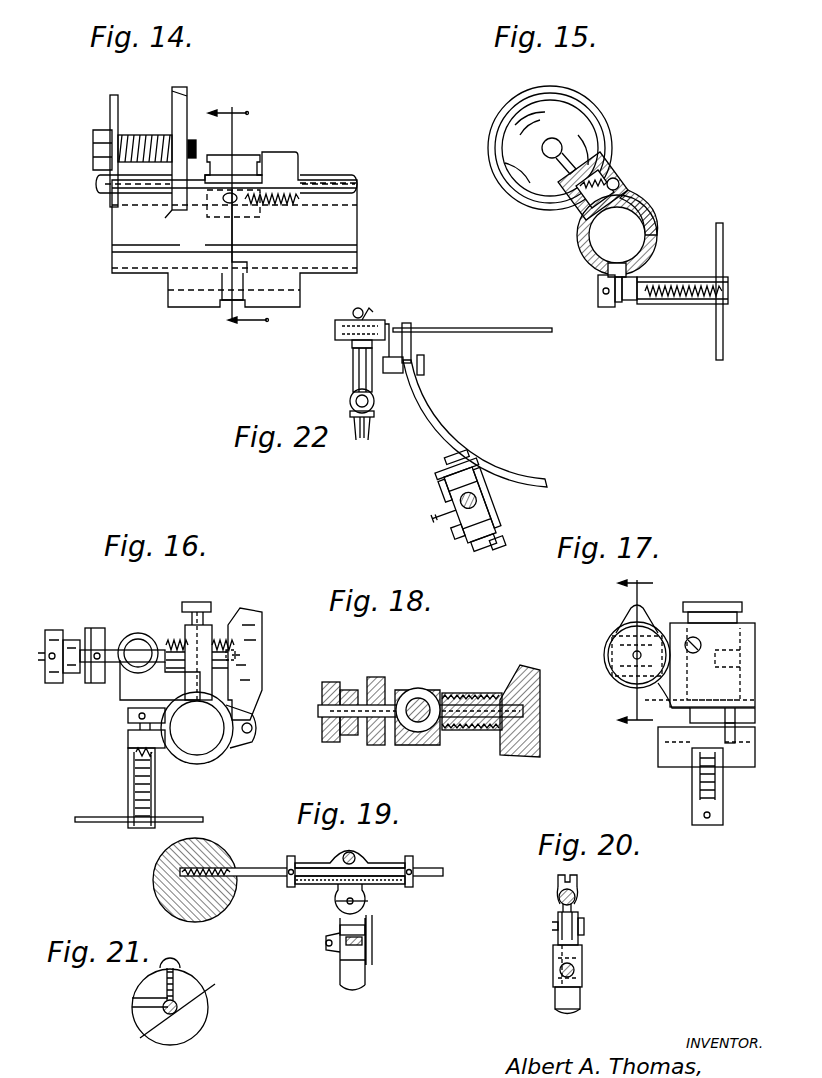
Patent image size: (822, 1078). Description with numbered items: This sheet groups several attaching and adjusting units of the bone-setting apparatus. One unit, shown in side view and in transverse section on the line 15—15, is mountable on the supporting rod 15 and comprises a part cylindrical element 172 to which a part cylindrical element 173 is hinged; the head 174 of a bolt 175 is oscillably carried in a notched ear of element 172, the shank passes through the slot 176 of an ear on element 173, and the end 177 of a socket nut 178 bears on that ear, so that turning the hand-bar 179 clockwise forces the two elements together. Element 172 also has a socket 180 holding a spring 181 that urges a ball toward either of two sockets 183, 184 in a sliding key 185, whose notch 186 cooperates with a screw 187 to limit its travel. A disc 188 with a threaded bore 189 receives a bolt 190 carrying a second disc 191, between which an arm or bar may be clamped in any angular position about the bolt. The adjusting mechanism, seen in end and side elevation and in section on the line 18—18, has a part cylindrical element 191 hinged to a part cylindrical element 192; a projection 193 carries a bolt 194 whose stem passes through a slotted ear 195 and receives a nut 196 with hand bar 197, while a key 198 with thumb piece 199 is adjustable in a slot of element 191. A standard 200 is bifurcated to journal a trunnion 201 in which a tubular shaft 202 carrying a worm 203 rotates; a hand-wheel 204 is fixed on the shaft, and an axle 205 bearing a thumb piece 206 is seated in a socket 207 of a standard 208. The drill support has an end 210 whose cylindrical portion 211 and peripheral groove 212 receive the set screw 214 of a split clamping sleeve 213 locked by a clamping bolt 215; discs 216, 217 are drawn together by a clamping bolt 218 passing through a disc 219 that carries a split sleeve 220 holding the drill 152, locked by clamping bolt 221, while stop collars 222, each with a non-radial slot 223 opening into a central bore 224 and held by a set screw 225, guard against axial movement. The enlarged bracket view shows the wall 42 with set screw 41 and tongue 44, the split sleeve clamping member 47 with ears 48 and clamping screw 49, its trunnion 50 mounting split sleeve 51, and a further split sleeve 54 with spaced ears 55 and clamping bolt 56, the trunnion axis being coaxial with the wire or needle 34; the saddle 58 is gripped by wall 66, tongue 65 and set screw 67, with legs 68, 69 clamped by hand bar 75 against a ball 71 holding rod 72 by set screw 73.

In FIG. 14, the rod 15 is at (238, 217).
In FIG. 17, the section line 18 is at (635, 654).
In FIG. 22, the wire or needle 34 is at (503, 328).
In FIG. 22, the set screw 41 is at (424, 367).
In FIG. 22, the wall 42 is at (421, 375).
In FIG. 22, the tongue 44 is at (393, 373).
In FIG. 22, the split sleeve clamping member 47 is at (335, 334).
In FIG. 22, the ears 48 is at (354, 312).
In FIG. 22, the clamping screw 49 is at (371, 319).
In FIG. 22, the trunnion 50 is at (352, 344).
In FIG. 22, the split sleeve 51 is at (353, 368).
In FIG. 22, the split sleeve 54 is at (350, 401).
In FIG. 22, the spaced ears 55 is at (359, 436).
In FIG. 22, the clamping bolt 56 is at (350, 415).
In FIG. 22, the saddle 58 is at (449, 443).
In FIG. 22, the tongue 65 is at (490, 495).
In FIG. 22, the wall 66 is at (492, 465).
In FIG. 22, the set screw 67 is at (490, 460).
In FIG. 22, the leg 68 is at (445, 525).
In FIG. 22, the leg 69 is at (470, 540).
In FIG. 22, the ball 71 is at (495, 505).
In FIG. 22, the rod 72 is at (462, 490).
In FIG. 22, the set screw 73 is at (440, 500).
In FIG. 22, the hand bar 75 is at (485, 538).
In FIG. 19, the drill 152 is at (443, 873).
In FIG. 21, the drill 152 is at (178, 1004).
In FIG. 14, the part cylindrical element 172 is at (112, 238).
In FIG. 15, the part cylindrical element 172 is at (577, 244).
In FIG. 15, the part cylindrical element 173 is at (658, 227).
In FIG. 14, the head 174 is at (226, 307).
In FIG. 15, the head 174 is at (598, 302).
In FIG. 15, the bolt 175 is at (619, 305).
In FIG. 15, the slot 176 is at (636, 302).
In FIG. 15, the end 177 is at (642, 280).
In FIG. 15, the socket nut 178 is at (708, 306).
In FIG. 15, the hand-bar 179 is at (723, 322).
In FIG. 15, the socket 180 is at (622, 175).
In FIG. 15, the spring 181 is at (610, 152).
In FIG. 15, the socket 183 is at (572, 207).
In FIG. 15, the socket 184 is at (612, 239).
In FIG. 14, the key 185 is at (243, 155).
In FIG. 15, the key 185 is at (570, 150).
In FIG. 14, the notch 186 is at (240, 205).
In FIG. 14, the screw 187 is at (288, 205).
In FIG. 14, the disc 188 is at (184, 95).
In FIG. 15, the disc 188 is at (500, 118).
In FIG. 15, the threaded bore 189 is at (556, 160).
In FIG. 14, the bolt 190 is at (150, 135).
In FIG. 14, the part cylindrical element 191 is at (110, 99).
In FIG. 16, the part cylindrical element 191 is at (243, 719).
In FIG. 17, the part cylindrical element 191 is at (750, 680).
In FIG. 16, the part cylindrical element 192 is at (226, 757).
In FIG. 17, the part cylindrical element 192 is at (755, 762).
In FIG. 16, the projection 193 is at (128, 716).
In FIG. 17, the projection 193 is at (756, 713).
In FIG. 16, the bolt 194 is at (138, 727).
In FIG. 17, the bolt 194 is at (736, 730).
In FIG. 16, the slotted ear 195 is at (130, 742).
In FIG. 17, the slotted ear 195 is at (660, 742).
In FIG. 16, the nut 196 is at (156, 803).
In FIG. 17, the nut 196 is at (692, 806).
In FIG. 16, the hand bar 197 is at (108, 823).
In FIG. 16, the key 198 is at (213, 627).
In FIG. 16, the thumb piece 199 is at (208, 603).
In FIG. 17, the thumb piece 199 is at (726, 602).
In FIG. 16, the standard 200 is at (124, 690).
In FIG. 18, the standard 200 is at (437, 746).
In FIG. 17, the standard 200 is at (612, 659).
In FIG. 16, the trunnion 201 is at (138, 633).
In FIG. 18, the tubular shaft 202 is at (412, 698).
In FIG. 18, the worm 203 is at (476, 693).
In FIG. 16, the hand-wheel 204 is at (93, 628).
In FIG. 18, the hand-wheel 204 is at (378, 677).
In FIG. 17, the hand-wheel 204 is at (612, 647).
In FIG. 18, the axle 205 is at (400, 745).
In FIG. 16, the thumb piece 206 is at (53, 630).
In FIG. 18, the thumb piece 206 is at (339, 690).
In FIG. 18, the socket 207 is at (524, 712).
In FIG. 16, the standard 208 is at (262, 654).
In FIG. 18, the standard 208 is at (540, 691).
In FIG. 17, the standard 208 is at (626, 613).
In FIG. 19, the end 210 is at (364, 988).
In FIG. 20, the end 210 is at (576, 1011).
In FIG. 19, the cylindrical portion 211 is at (366, 968).
In FIG. 20, the cylindrical portion 211 is at (555, 996).
In FIG. 19, the peripheral groove 212 is at (338, 950).
In FIG. 19, the split clamping sleeve 213 is at (366, 928).
In FIG. 19, the set screw 214 is at (366, 942).
In FIG. 20, the set screw 214 is at (560, 972).
In FIG. 19, the clamping bolt 215 is at (326, 944).
In FIG. 20, the disc 216 is at (558, 918).
In FIG. 19, the disc 217 is at (368, 901).
In FIG. 20, the disc 217 is at (580, 916).
In FIG. 19, the clamping bolt 218 is at (340, 905).
In FIG. 20, the clamping bolt 218 is at (584, 928).
In FIG. 20, the disc 219 is at (575, 909).
In FIG. 19, the split sleeve 220 is at (322, 884).
In FIG. 20, the split sleeve 220 is at (559, 898).
In FIG. 20, the clamping bolt 221 is at (578, 883).
In FIG. 19, the stop collars 222 is at (291, 856).
In FIG. 21, the stop collars 222 is at (208, 1013).
In FIG. 21, the non-radial slot 223 is at (132, 1003).
In FIG. 21, the central bore 224 is at (148, 1033).
In FIG. 21, the set screw 225 is at (177, 961).